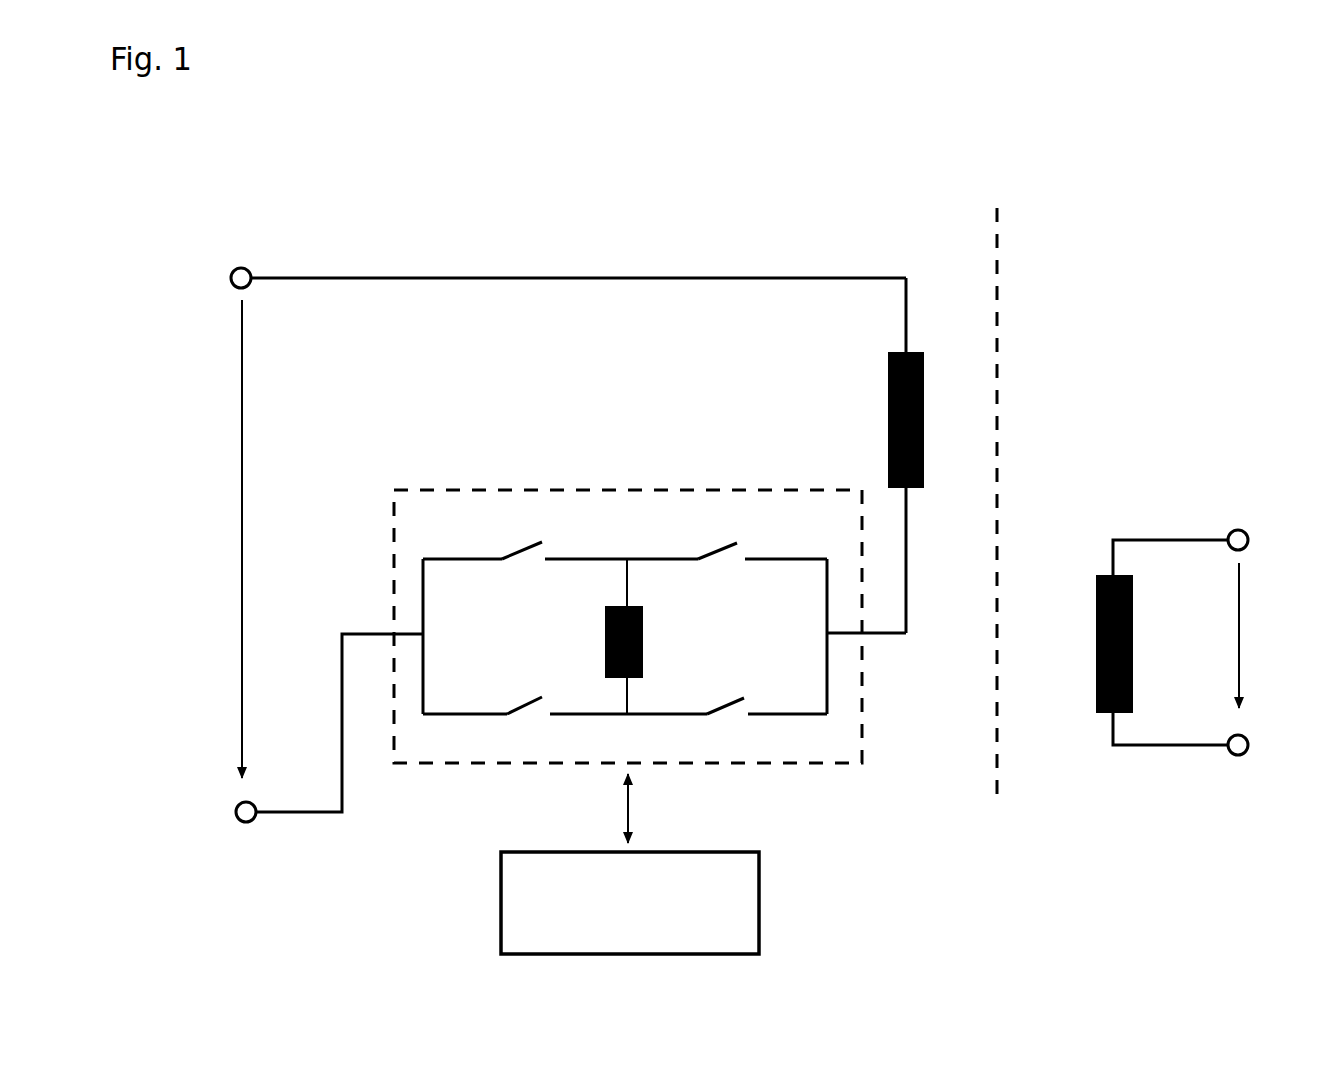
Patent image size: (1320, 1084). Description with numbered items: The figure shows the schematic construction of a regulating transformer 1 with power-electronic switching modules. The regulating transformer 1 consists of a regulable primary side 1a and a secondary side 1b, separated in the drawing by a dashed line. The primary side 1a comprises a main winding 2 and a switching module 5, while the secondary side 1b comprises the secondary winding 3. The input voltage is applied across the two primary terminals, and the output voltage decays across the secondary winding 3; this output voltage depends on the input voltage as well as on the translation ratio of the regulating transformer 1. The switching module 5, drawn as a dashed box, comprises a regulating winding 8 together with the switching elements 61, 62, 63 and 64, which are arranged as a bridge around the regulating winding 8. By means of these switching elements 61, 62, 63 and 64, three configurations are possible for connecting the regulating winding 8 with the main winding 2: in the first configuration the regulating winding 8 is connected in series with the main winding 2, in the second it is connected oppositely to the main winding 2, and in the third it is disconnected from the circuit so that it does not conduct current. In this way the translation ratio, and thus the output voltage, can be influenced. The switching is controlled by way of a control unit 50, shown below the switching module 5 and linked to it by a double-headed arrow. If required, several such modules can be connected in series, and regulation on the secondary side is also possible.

The regulating transformer 1 is at (307, 172).
The regulable primary side 1a is at (913, 233).
The secondary side 1b is at (1076, 240).
The main winding 2 is at (881, 428).
The secondary winding 3 is at (1093, 632).
The switching module 5 is at (382, 599).
The regulating winding 8 is at (595, 644).
The control unit 50 is at (630, 864).
The switching element 61 is at (505, 548).
The switching element 62 is at (513, 702).
The switching element 63 is at (718, 548).
The switching element 64 is at (724, 703).